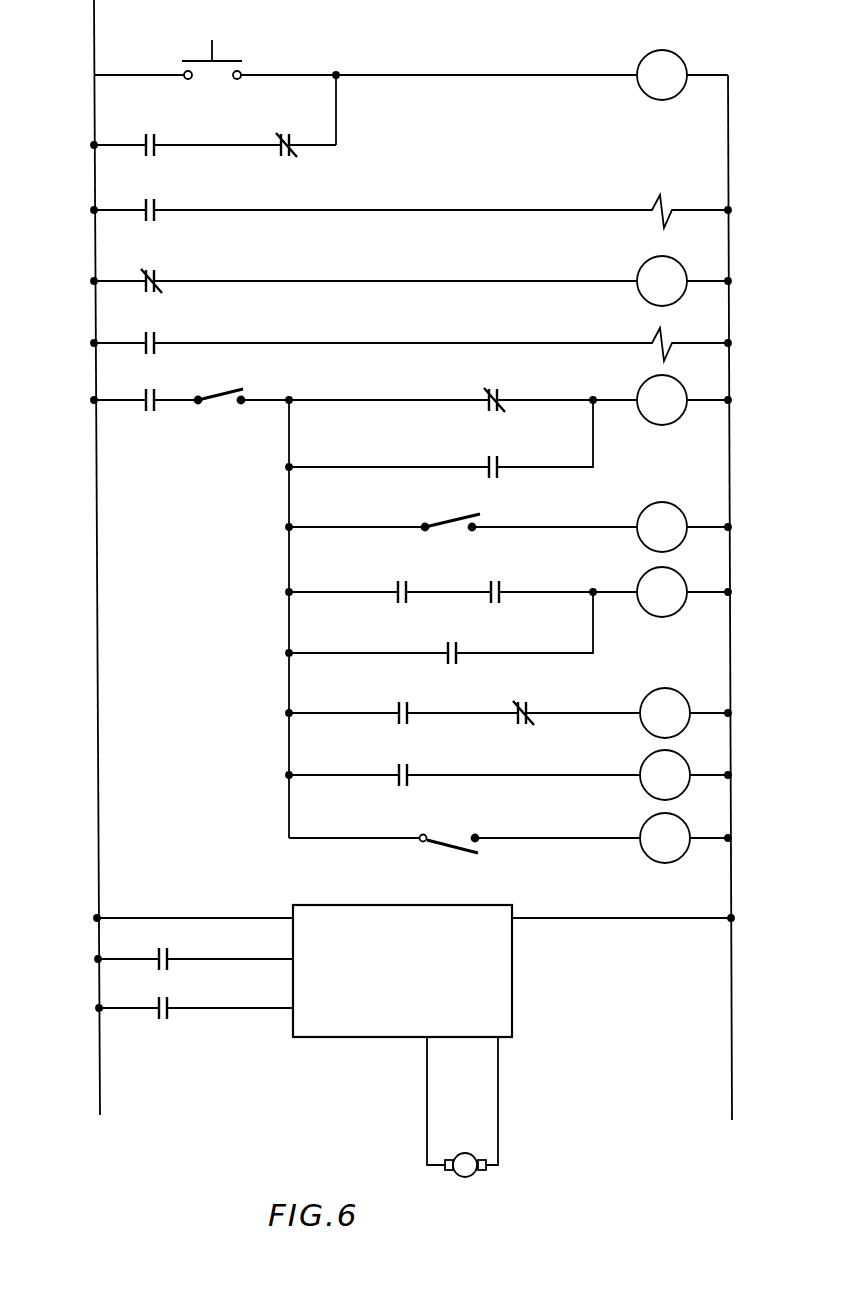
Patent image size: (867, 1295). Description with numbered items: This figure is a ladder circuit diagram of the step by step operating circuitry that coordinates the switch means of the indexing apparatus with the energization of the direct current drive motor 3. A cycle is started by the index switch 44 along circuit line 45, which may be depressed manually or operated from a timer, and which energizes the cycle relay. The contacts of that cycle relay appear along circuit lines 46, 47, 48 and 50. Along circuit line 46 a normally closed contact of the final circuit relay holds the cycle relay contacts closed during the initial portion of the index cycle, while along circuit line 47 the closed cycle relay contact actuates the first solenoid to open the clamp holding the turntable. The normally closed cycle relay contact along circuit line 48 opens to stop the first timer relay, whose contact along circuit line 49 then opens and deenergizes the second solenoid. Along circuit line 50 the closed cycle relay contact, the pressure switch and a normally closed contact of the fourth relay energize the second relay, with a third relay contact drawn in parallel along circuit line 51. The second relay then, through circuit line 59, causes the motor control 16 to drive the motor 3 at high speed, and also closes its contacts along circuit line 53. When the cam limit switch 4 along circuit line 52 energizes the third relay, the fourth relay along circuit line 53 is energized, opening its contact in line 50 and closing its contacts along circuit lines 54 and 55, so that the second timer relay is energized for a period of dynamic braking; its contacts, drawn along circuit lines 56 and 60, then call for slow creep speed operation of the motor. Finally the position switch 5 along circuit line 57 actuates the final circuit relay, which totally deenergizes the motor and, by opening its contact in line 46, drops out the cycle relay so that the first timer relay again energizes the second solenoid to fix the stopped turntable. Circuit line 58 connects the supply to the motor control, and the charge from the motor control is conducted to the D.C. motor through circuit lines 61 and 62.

The drive means 3 is at (458, 1153).
The cam limit switch 4 is at (425, 527).
The position switch 5 is at (475, 838).
The motor control 16 is at (512, 1005).
The switch 44 is at (238, 61).
The circuit line 45 is at (94, 75).
The circuit line 46 is at (94, 145).
The circuit line 47 is at (94, 210).
The circuit line 48 is at (94, 281).
The circuit line 49 is at (94, 343).
The circuit line 50 is at (94, 400).
The circuit line 51 is at (289, 467).
The circuit line 52 is at (478, 520).
The circuit line 53 is at (289, 592).
The circuit line 54 is at (289, 653).
The circuit line 55 is at (289, 713).
The circuit line 56 is at (289, 775).
The circuit line 57 is at (478, 833).
The circuit line 58 is at (97, 918).
The circuit line 59 is at (98, 959).
The circuit line 60 is at (99, 1008).
The circuit line 61 is at (427, 1105).
The circuit line 62 is at (498, 1095).